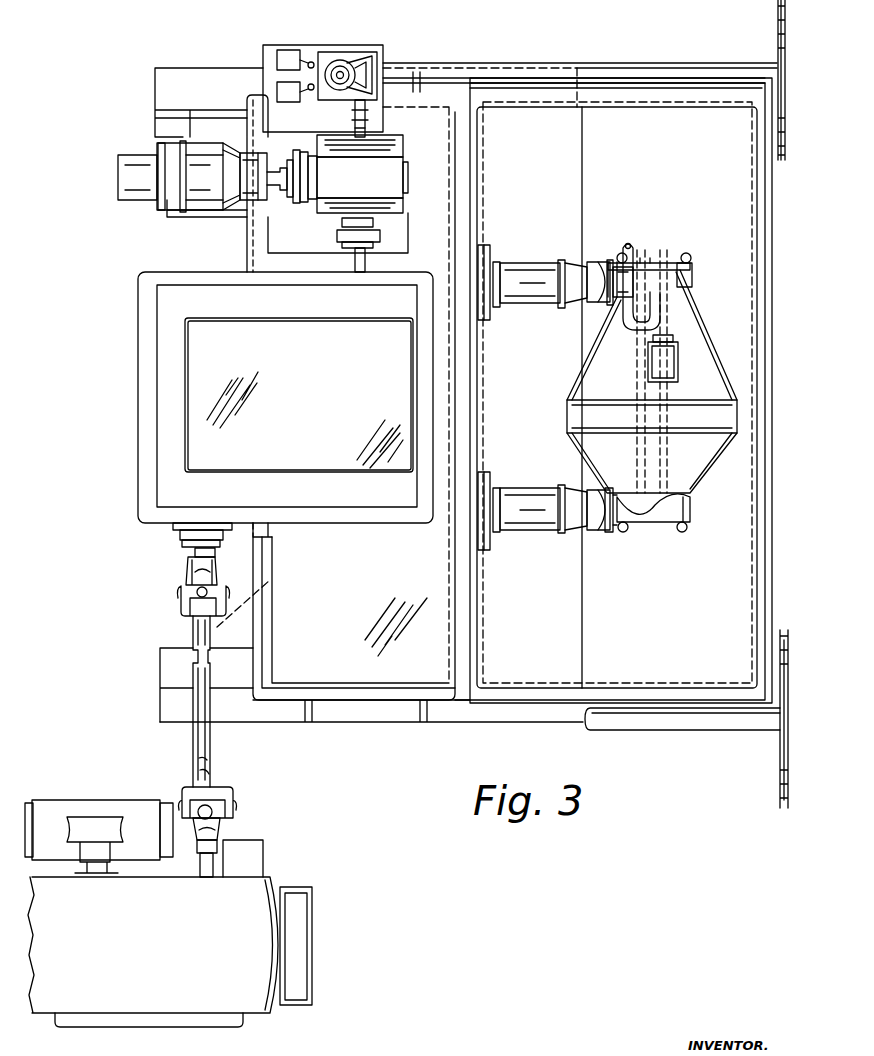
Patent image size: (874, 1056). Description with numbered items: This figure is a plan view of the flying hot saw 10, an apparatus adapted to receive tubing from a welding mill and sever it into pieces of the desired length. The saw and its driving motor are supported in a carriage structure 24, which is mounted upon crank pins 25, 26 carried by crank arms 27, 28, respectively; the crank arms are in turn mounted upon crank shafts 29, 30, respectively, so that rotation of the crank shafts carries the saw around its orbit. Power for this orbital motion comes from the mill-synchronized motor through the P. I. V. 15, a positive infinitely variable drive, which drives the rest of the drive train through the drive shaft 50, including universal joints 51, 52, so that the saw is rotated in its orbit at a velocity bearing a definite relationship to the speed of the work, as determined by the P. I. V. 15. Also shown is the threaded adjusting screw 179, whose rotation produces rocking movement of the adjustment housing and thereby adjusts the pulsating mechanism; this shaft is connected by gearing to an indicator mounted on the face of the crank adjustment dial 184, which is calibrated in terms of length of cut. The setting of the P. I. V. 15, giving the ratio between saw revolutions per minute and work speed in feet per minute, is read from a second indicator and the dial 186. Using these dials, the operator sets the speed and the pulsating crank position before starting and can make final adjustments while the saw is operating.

The flying hot saw 10 is at (255, 407).
The P. I. V. (positive infinitely variable drive) 15 is at (147, 933).
The carriage structure 24 is at (652, 361).
The crank pin 25 is at (673, 508).
The crank pin 26 is at (687, 263).
The crank arm 27 is at (570, 517).
The crank arm 28 is at (573, 273).
The crank shaft 29 is at (490, 543).
The crank shaft 30 is at (490, 253).
The drive shaft 50 is at (205, 742).
The universal joint 51 is at (228, 793).
The universal joint 52 is at (182, 610).
The threaded adjusting screw 179 is at (475, 72).
The crank adjustment dial 184 is at (785, 42).
The dial 186 is at (788, 783).